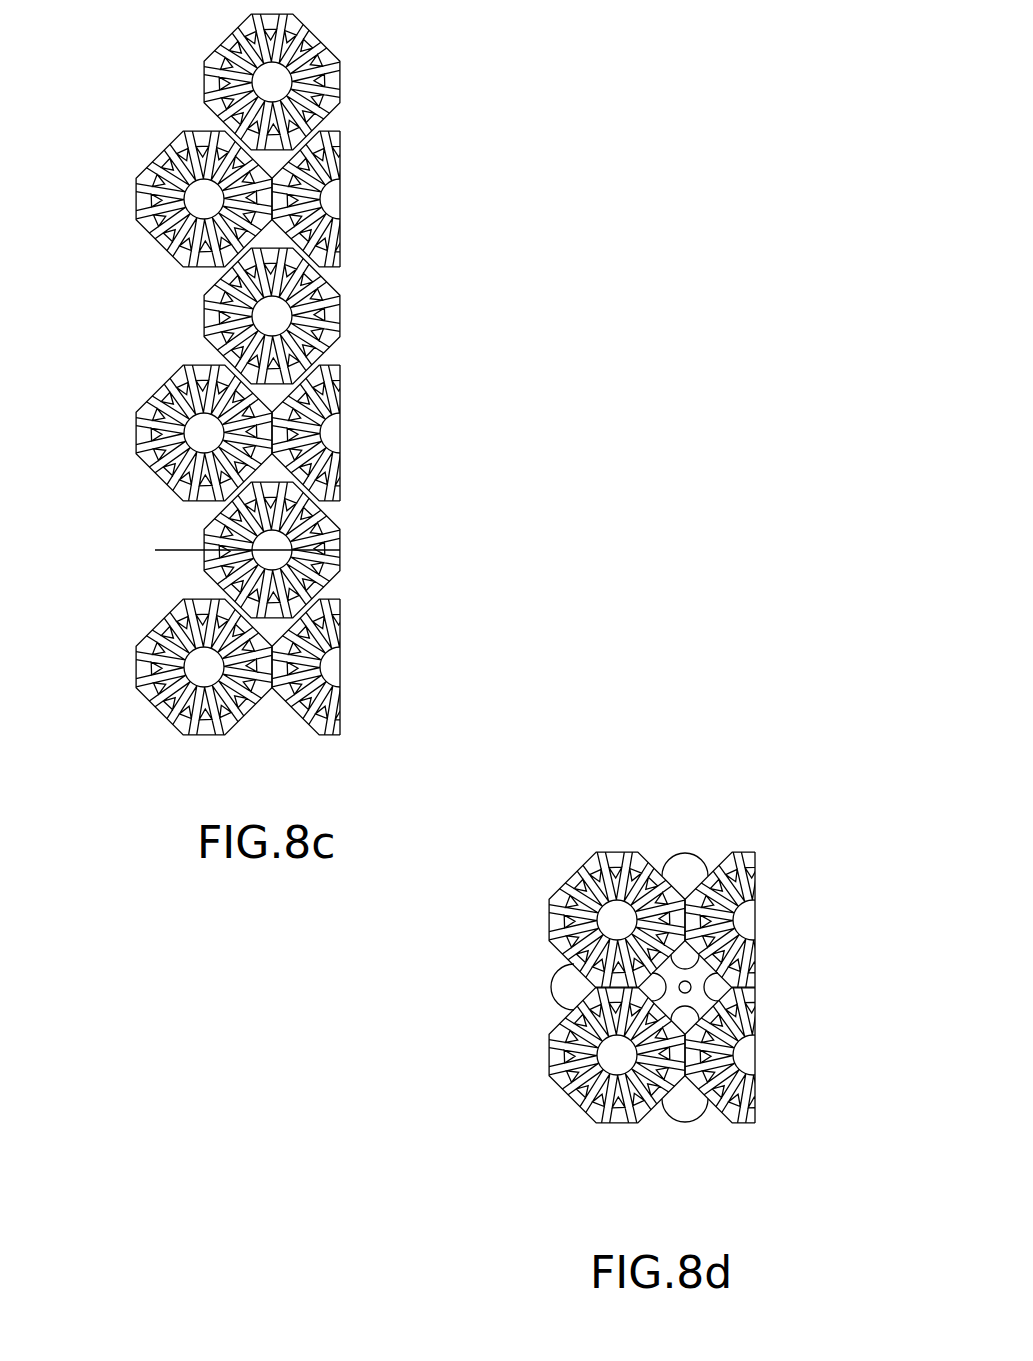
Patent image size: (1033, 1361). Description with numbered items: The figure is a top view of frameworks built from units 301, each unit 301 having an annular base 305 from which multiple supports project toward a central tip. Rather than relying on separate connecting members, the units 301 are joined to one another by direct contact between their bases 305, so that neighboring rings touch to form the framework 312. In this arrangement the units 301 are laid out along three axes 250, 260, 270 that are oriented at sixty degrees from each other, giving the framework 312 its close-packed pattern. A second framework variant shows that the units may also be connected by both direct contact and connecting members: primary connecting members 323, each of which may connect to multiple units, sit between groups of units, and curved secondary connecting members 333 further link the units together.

In FIG. 8C, the axis 250 is at (373, 433).
In FIG. 8C, the axis 260 is at (340, 550).
In FIG. 8C, the axis 270 is at (333, 658).
In FIG. 8C, the unit 301 is at (205, 309).
In FIG. 8C, the annular base 305 is at (217, 80).
In FIG. 8C, the framework 312 is at (249, 140).
In FIG. 8D, the primary connecting member 323 is at (692, 987).
In FIG. 8D, the secondary connecting member 333 is at (690, 1124).